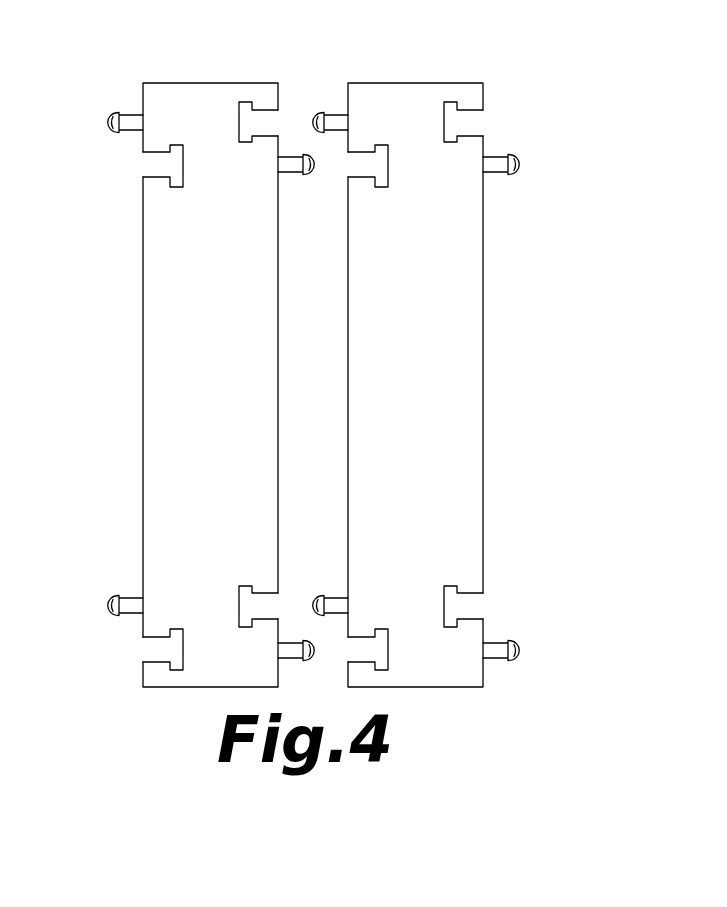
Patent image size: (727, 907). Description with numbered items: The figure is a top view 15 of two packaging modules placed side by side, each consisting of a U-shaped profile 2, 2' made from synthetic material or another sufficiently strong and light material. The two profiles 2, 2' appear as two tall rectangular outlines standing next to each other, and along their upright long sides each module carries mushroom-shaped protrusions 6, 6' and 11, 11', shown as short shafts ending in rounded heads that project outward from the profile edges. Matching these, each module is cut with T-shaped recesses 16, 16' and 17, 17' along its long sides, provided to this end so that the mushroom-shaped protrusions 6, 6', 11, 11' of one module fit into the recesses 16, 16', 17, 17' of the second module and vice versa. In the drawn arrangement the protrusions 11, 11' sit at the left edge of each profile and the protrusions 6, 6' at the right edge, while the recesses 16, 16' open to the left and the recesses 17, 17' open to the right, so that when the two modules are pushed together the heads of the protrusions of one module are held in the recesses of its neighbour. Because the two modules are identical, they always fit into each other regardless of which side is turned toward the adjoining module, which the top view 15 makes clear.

The U-shaped profile 2 is at (458, 385).
The U-shaped profile 2' is at (167, 385).
The protrusion 6 is at (398, 683).
The protrusion 6' is at (429, 200).
The mushroom-shaped protrusion 11 is at (208, 578).
The mushroom-shaped protrusion 11' is at (209, 94).
The top view 15 is at (569, 84).
The recess 16 is at (252, 680).
The recess 16' is at (306, 206).
The recess 17 is at (339, 668).
The recess 17' is at (398, 88).